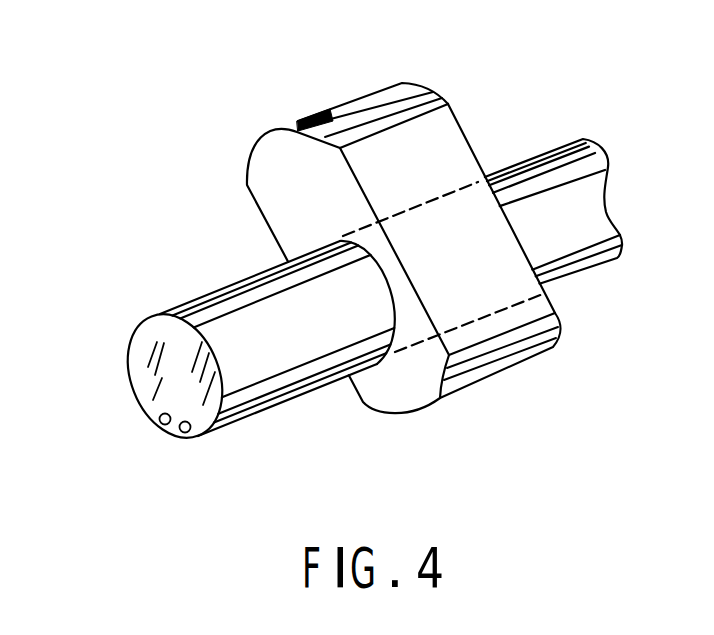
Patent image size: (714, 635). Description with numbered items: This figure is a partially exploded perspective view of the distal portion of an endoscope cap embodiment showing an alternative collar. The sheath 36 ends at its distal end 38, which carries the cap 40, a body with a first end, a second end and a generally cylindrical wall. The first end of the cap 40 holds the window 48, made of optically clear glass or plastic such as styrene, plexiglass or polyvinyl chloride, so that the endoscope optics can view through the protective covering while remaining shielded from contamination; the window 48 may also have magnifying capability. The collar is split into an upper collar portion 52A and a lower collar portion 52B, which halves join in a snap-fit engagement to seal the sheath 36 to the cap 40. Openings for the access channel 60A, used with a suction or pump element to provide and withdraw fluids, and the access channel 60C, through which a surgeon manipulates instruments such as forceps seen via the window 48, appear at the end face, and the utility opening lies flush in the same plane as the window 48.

The sheath 36 is at (538, 158).
The distal end 38 is at (334, 231).
The cap 40 is at (217, 290).
The window 48 is at (147, 365).
The upper collar portion 52A is at (328, 112).
The lower collar portion 52B is at (507, 374).
The access channel 60A is at (158, 419).
The access channel 60C is at (181, 432).